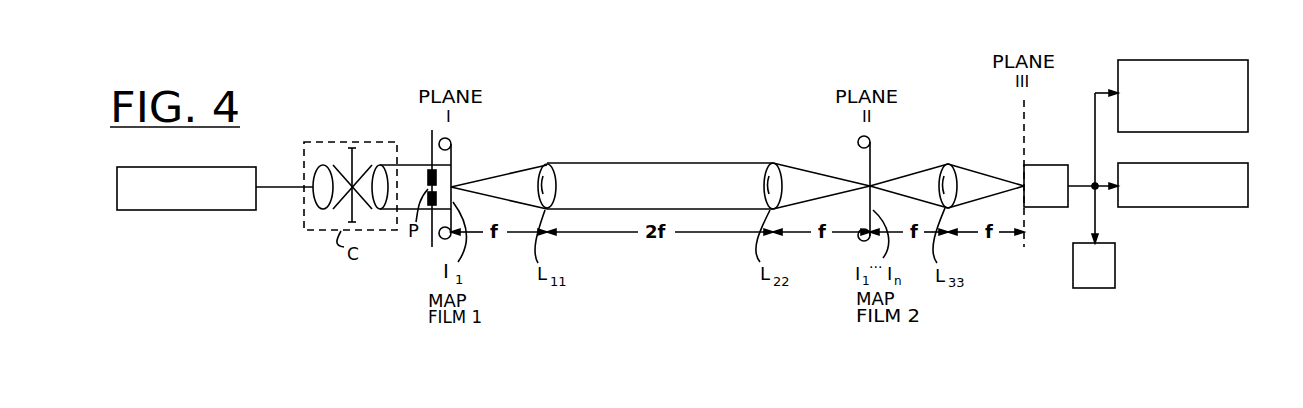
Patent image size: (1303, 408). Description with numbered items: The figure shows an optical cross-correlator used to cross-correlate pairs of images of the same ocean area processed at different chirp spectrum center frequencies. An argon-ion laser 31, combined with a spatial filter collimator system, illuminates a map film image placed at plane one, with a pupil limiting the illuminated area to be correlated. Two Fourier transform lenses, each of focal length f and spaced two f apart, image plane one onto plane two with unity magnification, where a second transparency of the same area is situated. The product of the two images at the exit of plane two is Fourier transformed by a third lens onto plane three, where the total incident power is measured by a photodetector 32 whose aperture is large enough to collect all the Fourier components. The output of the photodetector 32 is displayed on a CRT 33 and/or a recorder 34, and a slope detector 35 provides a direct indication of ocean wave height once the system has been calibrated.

The argon-ion laser 31 is at (223, 167).
The photodetector 32 is at (1036, 165).
The CRT 33 is at (1115, 250).
The recorder 34 is at (1177, 203).
The slope detector 35 is at (1122, 78).